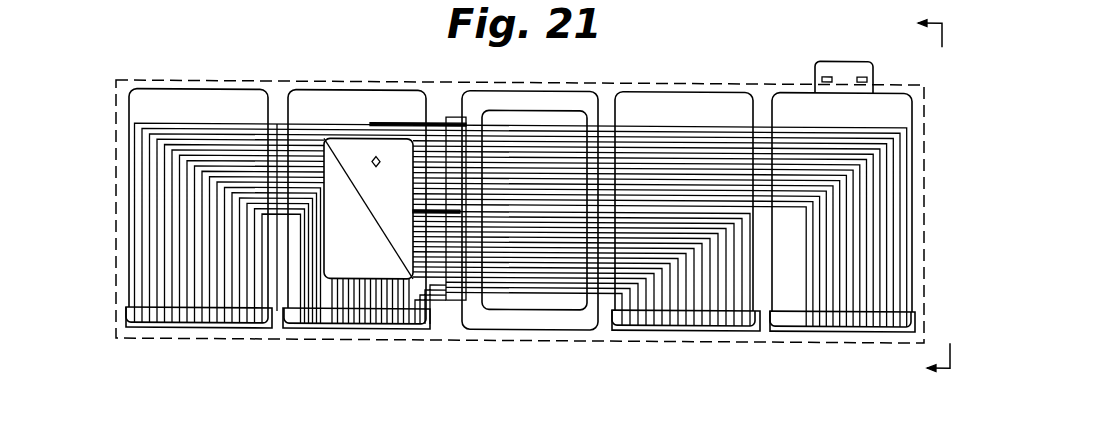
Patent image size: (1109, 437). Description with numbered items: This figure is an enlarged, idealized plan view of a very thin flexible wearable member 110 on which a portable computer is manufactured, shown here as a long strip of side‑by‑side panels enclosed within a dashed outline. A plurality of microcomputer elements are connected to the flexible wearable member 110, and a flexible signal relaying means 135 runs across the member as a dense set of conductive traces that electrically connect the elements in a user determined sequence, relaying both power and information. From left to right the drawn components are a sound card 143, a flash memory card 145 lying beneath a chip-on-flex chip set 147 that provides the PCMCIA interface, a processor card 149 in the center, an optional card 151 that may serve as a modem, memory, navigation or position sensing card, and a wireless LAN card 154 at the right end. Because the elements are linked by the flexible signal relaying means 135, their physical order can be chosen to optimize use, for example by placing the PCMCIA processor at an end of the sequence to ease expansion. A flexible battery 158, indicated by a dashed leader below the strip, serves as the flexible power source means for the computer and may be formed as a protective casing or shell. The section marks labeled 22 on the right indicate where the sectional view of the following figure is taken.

The flexible wearable member 110 is at (212, 363).
The sound card 143 is at (168, 107).
The flexible signal relaying means 135 is at (277, 126).
The flash memory card 145 is at (333, 297).
The chip-on-flex chip set 147 is at (376, 153).
The processor card 149 is at (553, 315).
The optional card 151 is at (678, 103).
The wireless LAN card 154 is at (807, 301).
The flexible battery 158 is at (510, 338).
The section line 22- 22 is at (918, 198).